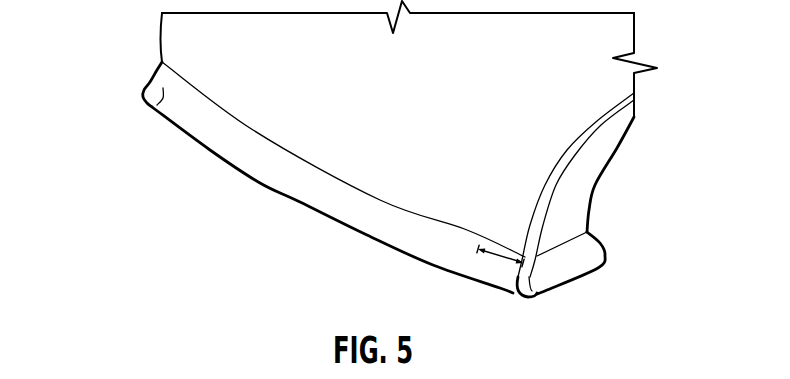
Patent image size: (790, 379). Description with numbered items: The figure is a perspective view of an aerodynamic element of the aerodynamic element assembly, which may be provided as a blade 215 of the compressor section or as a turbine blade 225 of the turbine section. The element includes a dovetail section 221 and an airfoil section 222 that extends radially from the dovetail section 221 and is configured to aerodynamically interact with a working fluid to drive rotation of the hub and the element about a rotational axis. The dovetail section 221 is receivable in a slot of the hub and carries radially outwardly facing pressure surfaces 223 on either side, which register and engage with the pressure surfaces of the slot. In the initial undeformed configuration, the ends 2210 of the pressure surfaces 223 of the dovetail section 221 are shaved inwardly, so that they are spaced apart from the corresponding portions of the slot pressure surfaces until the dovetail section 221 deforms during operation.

The blade 215 is at (404, 147).
The turbine blade 225 is at (428, 118).
The dovetail section 221 is at (143, 95).
The airfoil section 222 is at (590, 123).
The pressure surfaces 223 is at (150, 82).
The ends 2210 is at (152, 103).